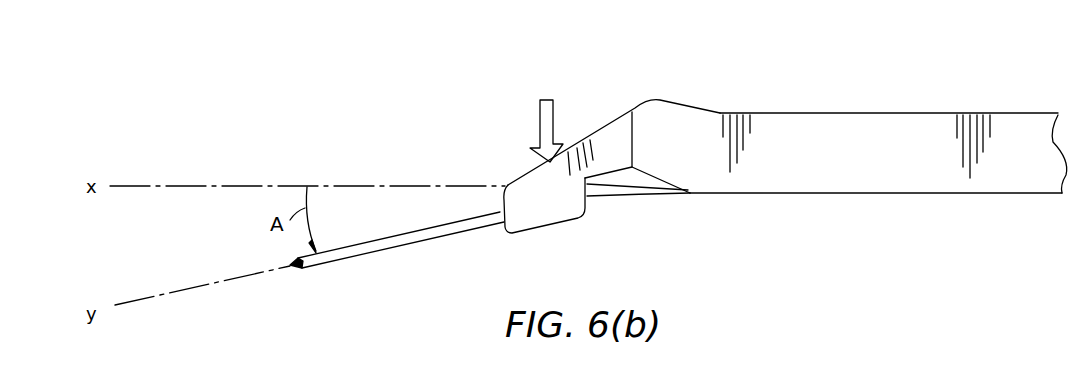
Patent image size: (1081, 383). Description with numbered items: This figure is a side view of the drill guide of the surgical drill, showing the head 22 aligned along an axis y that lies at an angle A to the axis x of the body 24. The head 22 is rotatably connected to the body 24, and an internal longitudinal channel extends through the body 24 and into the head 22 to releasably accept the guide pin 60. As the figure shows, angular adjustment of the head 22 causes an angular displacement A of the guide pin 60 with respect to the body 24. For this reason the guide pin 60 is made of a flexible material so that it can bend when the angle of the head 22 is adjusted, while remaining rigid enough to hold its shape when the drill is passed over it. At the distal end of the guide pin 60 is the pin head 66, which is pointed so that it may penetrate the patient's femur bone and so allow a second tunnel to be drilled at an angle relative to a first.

The head 22 is at (605, 140).
The body 24 is at (835, 130).
The guide pin 60 is at (440, 233).
The pin head 66 is at (292, 270).